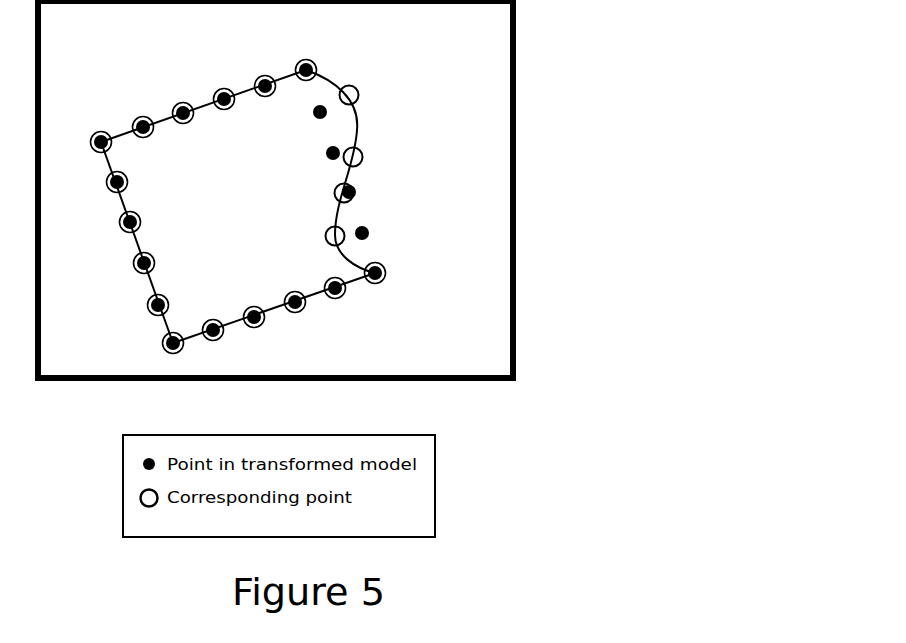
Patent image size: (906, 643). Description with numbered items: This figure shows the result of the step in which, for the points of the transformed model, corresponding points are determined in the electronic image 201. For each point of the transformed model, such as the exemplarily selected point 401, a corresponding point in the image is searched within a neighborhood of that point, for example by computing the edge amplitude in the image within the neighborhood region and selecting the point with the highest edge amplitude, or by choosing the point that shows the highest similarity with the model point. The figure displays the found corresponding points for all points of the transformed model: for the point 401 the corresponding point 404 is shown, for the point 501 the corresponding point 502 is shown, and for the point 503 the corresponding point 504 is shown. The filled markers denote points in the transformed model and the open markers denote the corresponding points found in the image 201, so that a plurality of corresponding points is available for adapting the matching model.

The image 201 is at (517, 58).
The point of the transformed model 401 is at (326, 116).
The corresponding point 404 is at (358, 90).
The point of the transformed model 501 is at (369, 229).
The corresponding point 502 is at (325, 236).
The point of the transformed model 503 is at (345, 294).
The corresponding point 504 is at (322, 280).